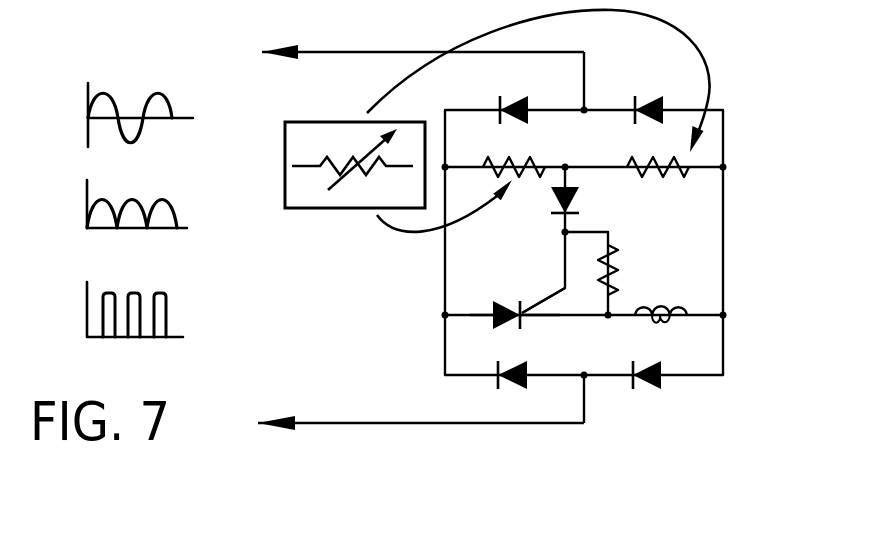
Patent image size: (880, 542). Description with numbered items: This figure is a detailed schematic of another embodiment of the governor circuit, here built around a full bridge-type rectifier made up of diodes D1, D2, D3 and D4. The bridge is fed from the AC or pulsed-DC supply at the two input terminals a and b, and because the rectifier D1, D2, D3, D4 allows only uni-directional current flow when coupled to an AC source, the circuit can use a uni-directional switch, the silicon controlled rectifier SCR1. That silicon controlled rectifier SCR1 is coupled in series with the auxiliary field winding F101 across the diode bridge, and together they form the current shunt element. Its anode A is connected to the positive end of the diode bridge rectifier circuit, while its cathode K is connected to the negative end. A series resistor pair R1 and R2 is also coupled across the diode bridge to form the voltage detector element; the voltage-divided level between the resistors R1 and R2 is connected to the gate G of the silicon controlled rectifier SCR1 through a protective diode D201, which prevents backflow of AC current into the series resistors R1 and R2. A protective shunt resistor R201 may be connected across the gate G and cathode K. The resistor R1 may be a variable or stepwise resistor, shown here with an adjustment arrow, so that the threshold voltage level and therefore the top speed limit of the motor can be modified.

The AC source terminal a is at (406, 50).
The AC source terminal b is at (405, 421).
The bridge rectifier diode D1 is at (513, 94).
The bridge rectifier diode D2 is at (650, 94).
The bridge rectifier diode D3 is at (508, 390).
The bridge rectifier diode D4 is at (644, 390).
The series resistor R1 is at (514, 153).
The series resistor R2 is at (658, 153).
The protective diode D201 is at (603, 203).
The protective shunt resistor R201 is at (641, 270).
The silicon controlled rectifier SCR1 is at (511, 309).
The gate G is at (543, 292).
The anode A is at (480, 331).
The cathode K is at (541, 331).
The auxiliary field winding F101 is at (662, 331).